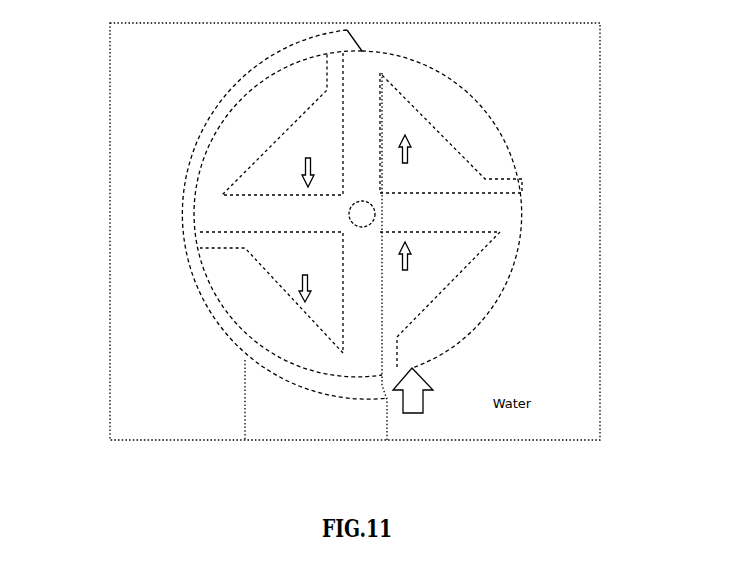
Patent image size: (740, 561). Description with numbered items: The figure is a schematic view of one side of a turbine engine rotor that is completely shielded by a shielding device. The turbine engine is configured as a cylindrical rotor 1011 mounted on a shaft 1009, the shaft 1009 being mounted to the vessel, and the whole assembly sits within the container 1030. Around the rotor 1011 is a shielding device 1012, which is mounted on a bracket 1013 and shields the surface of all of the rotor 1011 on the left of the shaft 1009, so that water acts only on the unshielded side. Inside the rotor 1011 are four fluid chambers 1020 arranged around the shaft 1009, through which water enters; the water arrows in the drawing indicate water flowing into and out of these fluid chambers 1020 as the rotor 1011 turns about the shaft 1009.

The container 1030 is at (600, 88).
The shielding device 1012 is at (193, 145).
The cylindrical rotor 1011 is at (480, 99).
The bracket 1013 is at (316, 256).
The fluid chambers 1020 is at (361, 211).
The shaft 1009 is at (362, 203).